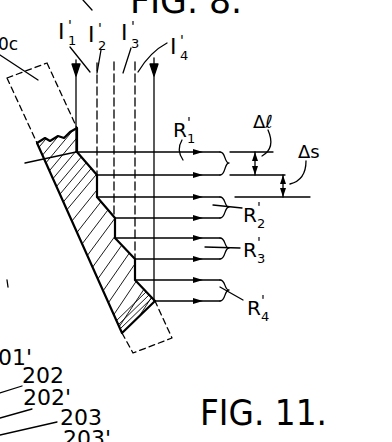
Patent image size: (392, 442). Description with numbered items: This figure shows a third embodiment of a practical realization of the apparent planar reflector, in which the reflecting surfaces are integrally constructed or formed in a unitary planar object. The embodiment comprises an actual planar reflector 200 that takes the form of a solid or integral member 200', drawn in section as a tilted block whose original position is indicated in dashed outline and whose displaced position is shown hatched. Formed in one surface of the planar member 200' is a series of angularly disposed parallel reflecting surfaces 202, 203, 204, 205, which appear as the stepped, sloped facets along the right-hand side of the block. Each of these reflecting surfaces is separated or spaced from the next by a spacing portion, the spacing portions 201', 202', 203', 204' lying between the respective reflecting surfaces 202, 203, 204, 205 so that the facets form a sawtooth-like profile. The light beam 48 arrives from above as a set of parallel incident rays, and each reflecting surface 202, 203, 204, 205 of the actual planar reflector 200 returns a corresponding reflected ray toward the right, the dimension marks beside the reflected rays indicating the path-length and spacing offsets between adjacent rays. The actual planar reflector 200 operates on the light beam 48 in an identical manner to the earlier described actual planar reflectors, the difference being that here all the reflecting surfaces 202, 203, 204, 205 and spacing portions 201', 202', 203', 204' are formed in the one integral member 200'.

The light beam 48 is at (138, 107).
The actual planar reflector 200 is at (176, 237).
The solid or integral member 200' is at (99, 226).
The spacing portion 201' is at (24, 178).
The reflecting surface 202 is at (36, 201).
The spacing portion 202' is at (45, 223).
The reflecting surface 203 is at (55, 243).
The spacing portion 203' is at (64, 261).
The reflecting surface 204 is at (71, 286).
The spacing portion 204' is at (80, 306).
The reflecting surface 205 is at (123, 320).